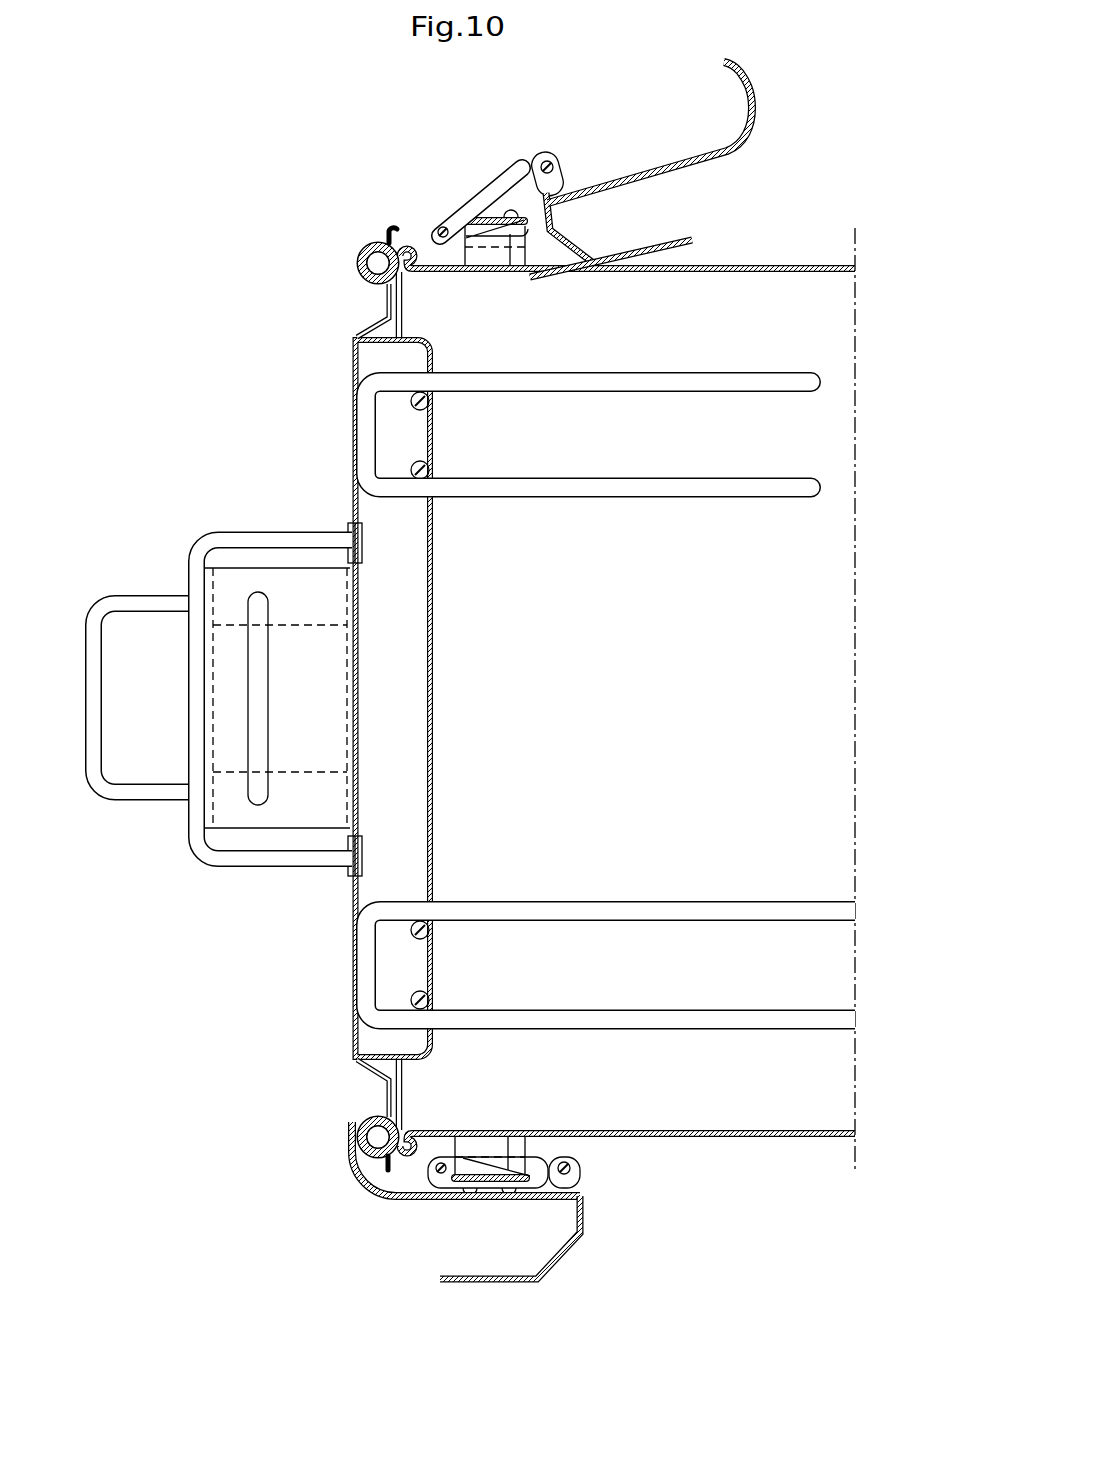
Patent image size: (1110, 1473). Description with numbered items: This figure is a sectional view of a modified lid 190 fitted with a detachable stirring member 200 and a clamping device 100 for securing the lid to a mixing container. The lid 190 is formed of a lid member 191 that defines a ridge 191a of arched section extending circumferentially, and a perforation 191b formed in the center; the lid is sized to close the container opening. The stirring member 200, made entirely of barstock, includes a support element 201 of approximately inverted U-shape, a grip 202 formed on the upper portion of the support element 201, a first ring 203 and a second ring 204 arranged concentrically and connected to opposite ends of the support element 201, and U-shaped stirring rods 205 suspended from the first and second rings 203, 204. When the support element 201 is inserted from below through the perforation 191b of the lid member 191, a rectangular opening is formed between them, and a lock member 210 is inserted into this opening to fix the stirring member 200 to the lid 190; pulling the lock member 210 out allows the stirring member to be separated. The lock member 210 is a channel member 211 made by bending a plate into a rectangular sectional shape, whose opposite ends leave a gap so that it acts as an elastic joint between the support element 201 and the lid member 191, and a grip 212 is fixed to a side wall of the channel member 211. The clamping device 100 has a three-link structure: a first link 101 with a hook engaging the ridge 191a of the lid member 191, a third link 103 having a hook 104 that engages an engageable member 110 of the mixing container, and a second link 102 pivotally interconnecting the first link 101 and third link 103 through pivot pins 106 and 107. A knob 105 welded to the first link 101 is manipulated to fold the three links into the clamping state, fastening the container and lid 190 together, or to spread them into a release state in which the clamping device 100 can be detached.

The clamping device 100 is at (402, 172).
The first link 101 is at (728, 150).
The second link 102 is at (517, 162).
The third link 103 is at (474, 214).
The hook 104 is at (511, 252).
The knob 105 is at (662, 242).
The pivot pin 106 is at (548, 157).
The pivot pin 107 is at (438, 226).
The engageable member 110 is at (483, 258).
The lid 190 is at (272, 342).
The lid member 191 is at (352, 381).
The ridge 191a is at (360, 268).
The perforation 191b is at (347, 753).
The stirring member 200 is at (735, 1047).
The support element 201 is at (230, 532).
The grip 202 is at (140, 592).
The first ring 203 is at (430, 470).
The second ring 204 is at (430, 398).
The stirring rods 205 is at (667, 490).
The lock member 210 is at (262, 562).
The channel member 211 is at (265, 833).
The grip 212 is at (270, 694).